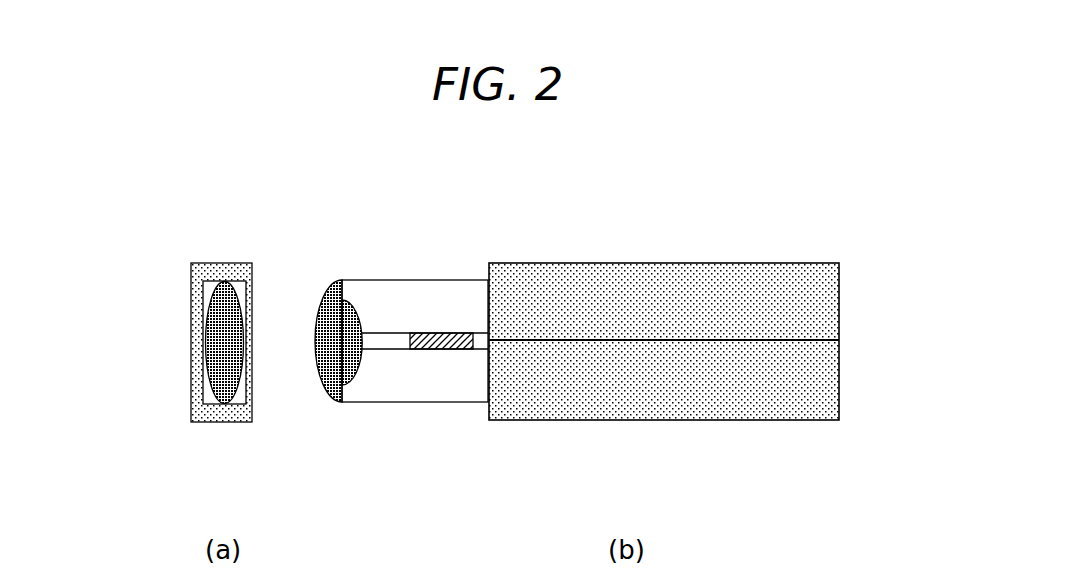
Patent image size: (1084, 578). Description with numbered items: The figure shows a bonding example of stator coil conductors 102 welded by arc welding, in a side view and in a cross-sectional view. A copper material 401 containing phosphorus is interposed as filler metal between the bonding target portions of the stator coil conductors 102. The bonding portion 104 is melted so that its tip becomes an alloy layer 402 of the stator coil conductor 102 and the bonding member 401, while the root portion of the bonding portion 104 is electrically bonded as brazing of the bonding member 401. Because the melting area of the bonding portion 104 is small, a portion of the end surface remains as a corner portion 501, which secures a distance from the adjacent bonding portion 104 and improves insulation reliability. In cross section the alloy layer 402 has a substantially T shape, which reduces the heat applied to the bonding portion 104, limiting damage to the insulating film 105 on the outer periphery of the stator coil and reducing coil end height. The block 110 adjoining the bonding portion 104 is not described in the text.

The stator coil conductor 102 is at (620, 330).
The bonding portion 104 is at (410, 380).
The insulating film 105 is at (227, 418).
The base block 110 is at (693, 267).
The copper material containing phosphorus 401 is at (440, 333).
The alloy layer 402 is at (240, 280).
The corner portion 501 is at (203, 268).